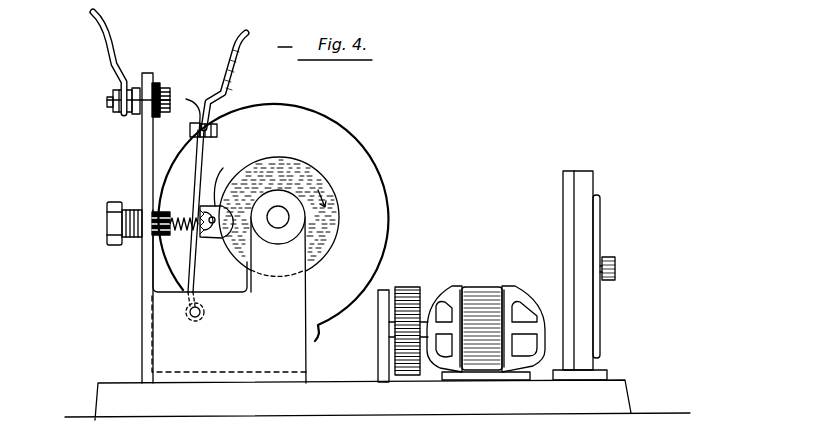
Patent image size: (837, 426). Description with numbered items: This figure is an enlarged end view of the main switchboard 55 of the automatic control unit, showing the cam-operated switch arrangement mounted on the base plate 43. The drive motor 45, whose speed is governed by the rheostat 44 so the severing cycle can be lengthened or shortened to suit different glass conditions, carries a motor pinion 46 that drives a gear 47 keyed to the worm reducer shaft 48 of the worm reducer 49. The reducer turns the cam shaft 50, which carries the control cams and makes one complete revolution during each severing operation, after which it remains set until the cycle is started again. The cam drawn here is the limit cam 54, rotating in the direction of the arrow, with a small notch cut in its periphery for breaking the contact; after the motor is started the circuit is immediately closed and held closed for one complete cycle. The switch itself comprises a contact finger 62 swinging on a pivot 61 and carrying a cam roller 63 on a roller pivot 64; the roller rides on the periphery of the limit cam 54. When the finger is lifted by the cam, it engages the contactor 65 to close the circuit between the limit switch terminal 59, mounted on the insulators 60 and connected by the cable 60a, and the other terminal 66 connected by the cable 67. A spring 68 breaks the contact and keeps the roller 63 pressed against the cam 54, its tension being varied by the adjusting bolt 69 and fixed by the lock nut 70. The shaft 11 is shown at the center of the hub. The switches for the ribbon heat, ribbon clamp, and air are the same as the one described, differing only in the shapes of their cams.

The shaft 11 is at (242, 192).
The base plate 43 is at (612, 402).
The rheostat 44 is at (585, 190).
The drive motor 45 is at (488, 293).
The motor pinion 46 is at (395, 358).
The gear 47 is at (414, 288).
The worm reducer shaft 48 is at (397, 320).
The worm reducer 49 is at (372, 155).
The cam shaft 50 is at (280, 216).
The limit cam 54 is at (340, 242).
The main switchboard 55 is at (145, 263).
The limit switch terminal 59 is at (161, 116).
The insulators 60 is at (138, 118).
The cable 60a is at (102, 33).
The pivot 61 is at (204, 318).
The contact finger 62 is at (198, 283).
The cam roller 63 is at (225, 178).
The roller pivot 64 is at (212, 224).
The contactor 65 is at (187, 99).
The other terminal 66 is at (219, 130).
The cable 67 is at (243, 60).
The spring 68 is at (186, 215).
The adjusting bolt 69 is at (106, 233).
The lock nut 70 is at (140, 200).